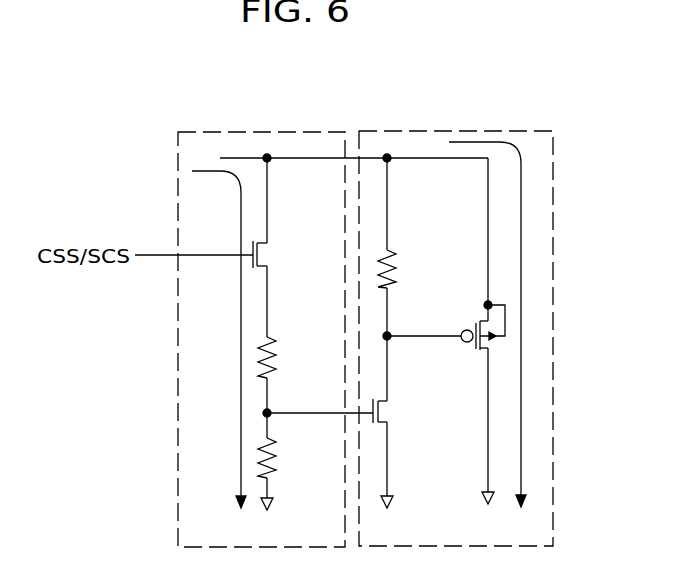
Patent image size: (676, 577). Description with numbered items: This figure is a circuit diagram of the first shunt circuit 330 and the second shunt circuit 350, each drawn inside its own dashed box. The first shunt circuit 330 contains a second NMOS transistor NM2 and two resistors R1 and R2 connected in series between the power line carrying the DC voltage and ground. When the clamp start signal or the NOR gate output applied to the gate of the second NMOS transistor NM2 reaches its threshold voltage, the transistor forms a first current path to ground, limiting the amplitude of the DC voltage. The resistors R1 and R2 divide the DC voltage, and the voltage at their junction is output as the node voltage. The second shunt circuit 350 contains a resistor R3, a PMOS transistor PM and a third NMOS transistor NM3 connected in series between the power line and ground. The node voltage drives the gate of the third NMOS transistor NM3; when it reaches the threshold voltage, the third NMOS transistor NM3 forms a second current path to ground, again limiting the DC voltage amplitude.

The first shunt circuit 330 is at (248, 130).
The second shunt circuit 350 is at (457, 130).
The second NMOS transistor NM2 is at (282, 255).
The resistor R1 is at (282, 357).
The resistor R2 is at (282, 458).
The resistor R3 is at (401, 269).
The p-channel MOS transistor PM is at (476, 325).
The third NMOS transistor NM3 is at (403, 411).